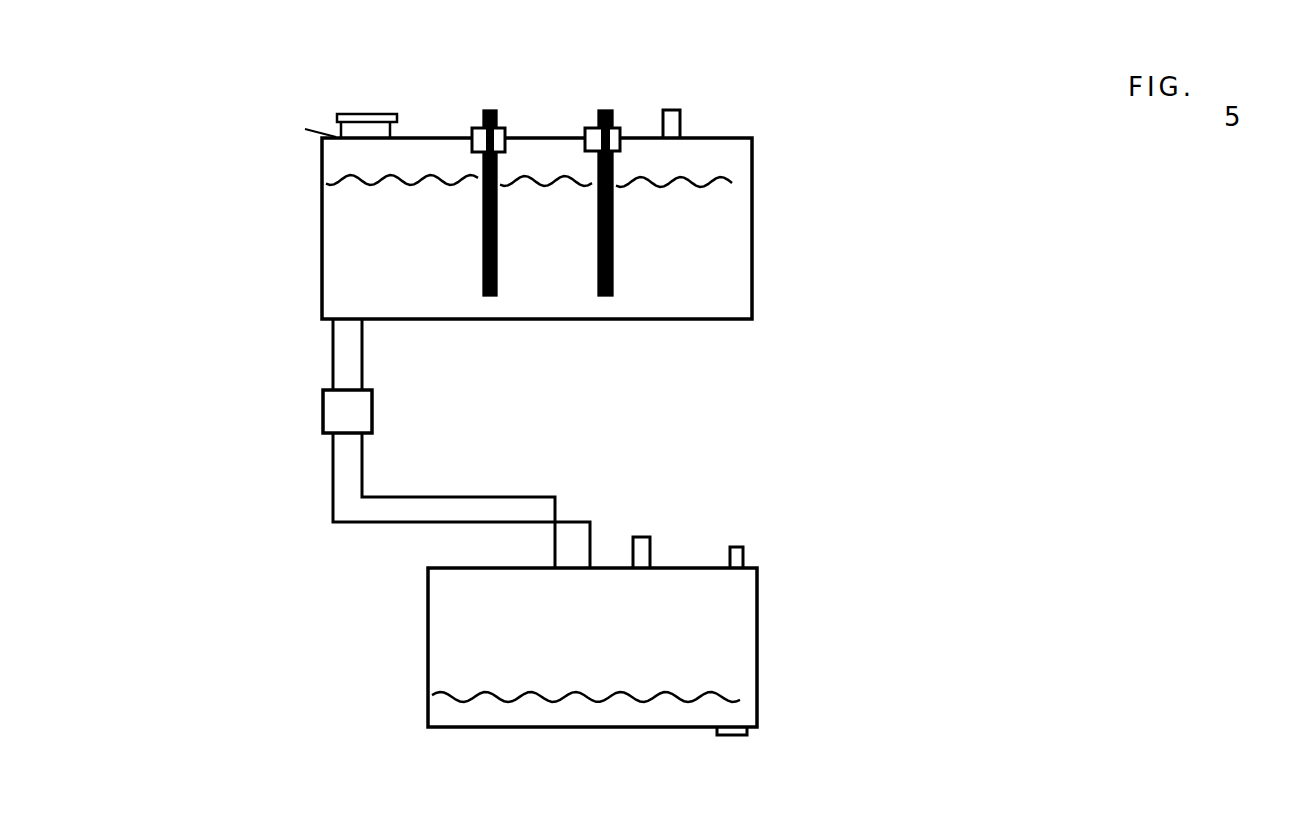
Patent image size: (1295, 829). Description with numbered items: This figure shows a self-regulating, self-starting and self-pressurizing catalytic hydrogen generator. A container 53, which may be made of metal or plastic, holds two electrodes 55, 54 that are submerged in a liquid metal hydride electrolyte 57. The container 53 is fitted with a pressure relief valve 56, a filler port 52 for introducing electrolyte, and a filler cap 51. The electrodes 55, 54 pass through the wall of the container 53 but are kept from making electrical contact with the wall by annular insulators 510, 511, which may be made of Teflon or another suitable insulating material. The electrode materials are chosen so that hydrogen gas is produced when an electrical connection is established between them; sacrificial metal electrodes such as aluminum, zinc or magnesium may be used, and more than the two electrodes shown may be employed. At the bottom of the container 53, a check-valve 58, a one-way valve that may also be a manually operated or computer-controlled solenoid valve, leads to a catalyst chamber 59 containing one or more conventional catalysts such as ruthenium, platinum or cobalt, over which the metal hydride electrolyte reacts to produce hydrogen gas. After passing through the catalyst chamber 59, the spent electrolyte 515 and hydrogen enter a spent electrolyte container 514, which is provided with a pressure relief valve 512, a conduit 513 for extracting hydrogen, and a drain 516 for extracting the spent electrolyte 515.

The filler cap 51 is at (372, 112).
The filler port 52 is at (296, 139).
The container 53 is at (752, 163).
The electrode 54 is at (492, 108).
The electrode 55 is at (604, 108).
The pressure relief valve 56 is at (676, 108).
The liquid metal hydride electrolyte 57 is at (715, 240).
The check-valve 58 is at (318, 408).
The catalyst chamber 59 is at (486, 496).
The annular insulator 510 is at (506, 134).
The annular insulator 511 is at (616, 136).
The pressure relief valve 512 is at (642, 534).
The conduit 513 is at (736, 540).
The spent electrolyte container 514 is at (765, 640).
The spent electrolyte 515 is at (742, 708).
The drain 516 is at (732, 739).